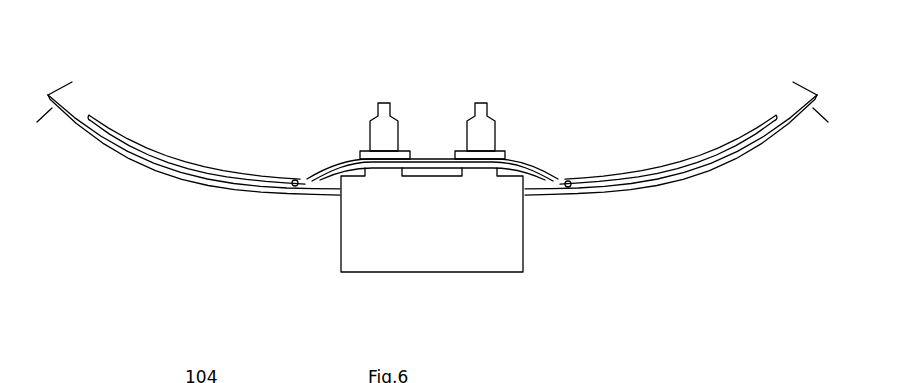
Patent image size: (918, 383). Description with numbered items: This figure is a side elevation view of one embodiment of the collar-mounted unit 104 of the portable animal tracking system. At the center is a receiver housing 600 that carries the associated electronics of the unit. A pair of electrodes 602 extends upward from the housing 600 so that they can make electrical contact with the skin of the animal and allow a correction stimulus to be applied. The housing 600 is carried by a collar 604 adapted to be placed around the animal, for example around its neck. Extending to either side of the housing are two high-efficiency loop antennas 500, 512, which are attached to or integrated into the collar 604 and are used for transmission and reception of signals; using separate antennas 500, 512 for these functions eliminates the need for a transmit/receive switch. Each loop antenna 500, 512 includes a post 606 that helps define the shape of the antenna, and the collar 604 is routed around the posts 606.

The collar-mounted unit 104 is at (560, 118).
The loop antenna 500 is at (203, 170).
The loop antenna 512 is at (660, 170).
The receiver housing 600 is at (496, 256).
The electrodes 602 is at (481, 102).
The collar 604 is at (167, 170).
The post 606 is at (296, 187).